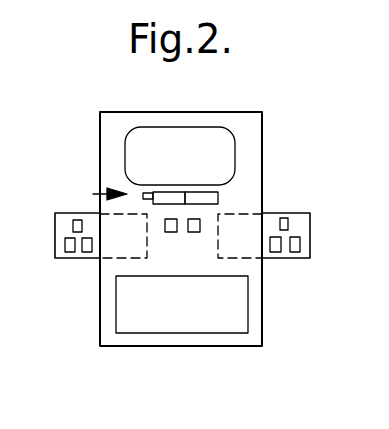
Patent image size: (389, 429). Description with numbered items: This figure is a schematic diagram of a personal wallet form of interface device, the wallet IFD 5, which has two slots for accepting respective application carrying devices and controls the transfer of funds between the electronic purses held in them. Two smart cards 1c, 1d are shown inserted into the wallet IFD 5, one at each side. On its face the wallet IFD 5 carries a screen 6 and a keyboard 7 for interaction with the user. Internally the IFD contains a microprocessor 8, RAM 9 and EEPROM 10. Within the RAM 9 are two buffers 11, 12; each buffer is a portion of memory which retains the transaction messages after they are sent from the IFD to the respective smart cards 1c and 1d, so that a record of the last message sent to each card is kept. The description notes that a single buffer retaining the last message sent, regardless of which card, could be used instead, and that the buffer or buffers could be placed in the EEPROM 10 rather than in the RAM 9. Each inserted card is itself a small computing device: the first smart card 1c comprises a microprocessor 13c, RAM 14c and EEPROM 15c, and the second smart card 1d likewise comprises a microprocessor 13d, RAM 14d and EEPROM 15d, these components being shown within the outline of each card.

The wallet IFD 5 is at (262, 162).
The screen 6 is at (173, 135).
The keyboard 7 is at (173, 326).
The microprocessor 8 is at (171, 232).
The RAM 9 is at (100, 194).
The EEPROM 10 is at (194, 232).
The buffer 11 is at (160, 194).
The buffer 12 is at (207, 196).
The smart card 1c is at (55, 238).
The microprocessor 13c is at (77, 220).
The RAM 14c is at (65, 245).
The EEPROM 15c is at (88, 253).
The smart card 1d is at (310, 233).
The microprocessor 13d is at (284, 218).
The RAM 14d is at (300, 244).
The EEPROM 15d is at (275, 253).